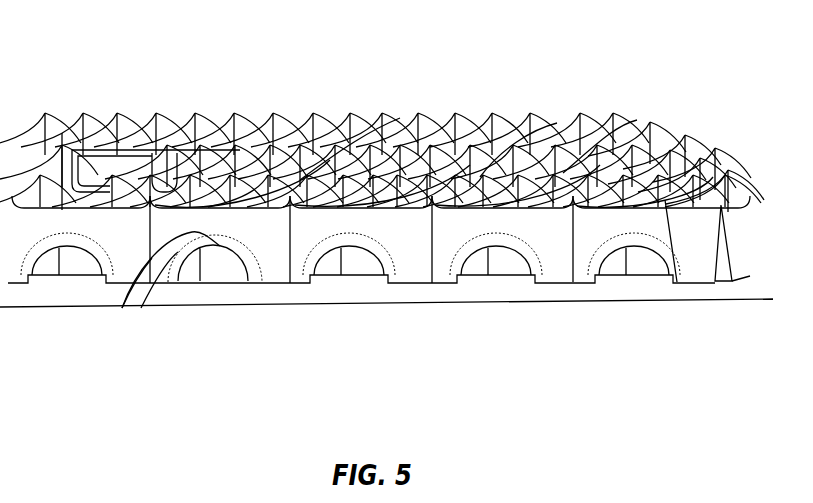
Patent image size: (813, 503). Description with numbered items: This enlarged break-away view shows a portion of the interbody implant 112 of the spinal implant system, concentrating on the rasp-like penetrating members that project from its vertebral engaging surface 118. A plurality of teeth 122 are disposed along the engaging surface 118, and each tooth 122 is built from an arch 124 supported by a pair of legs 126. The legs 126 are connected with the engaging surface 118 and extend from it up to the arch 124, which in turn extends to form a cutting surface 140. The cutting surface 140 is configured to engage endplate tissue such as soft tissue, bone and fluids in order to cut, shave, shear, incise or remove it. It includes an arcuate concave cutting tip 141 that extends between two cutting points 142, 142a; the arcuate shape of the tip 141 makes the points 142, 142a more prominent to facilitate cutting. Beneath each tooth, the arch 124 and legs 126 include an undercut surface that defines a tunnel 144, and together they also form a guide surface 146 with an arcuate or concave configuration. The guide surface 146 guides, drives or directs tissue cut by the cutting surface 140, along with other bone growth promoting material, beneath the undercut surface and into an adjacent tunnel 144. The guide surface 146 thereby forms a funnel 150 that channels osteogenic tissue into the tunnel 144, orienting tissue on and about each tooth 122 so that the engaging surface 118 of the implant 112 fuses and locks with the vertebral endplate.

The interbody implant 112 is at (603, 328).
The vertebral engaging surface 118 is at (483, 292).
The tooth 122 is at (270, 263).
The arch 124 is at (266, 125).
The legs 126 is at (141, 308).
The cutting surface 140 is at (172, 132).
The arcuate concave cutting tip 141 is at (235, 128).
The cutting point 142 is at (122, 132).
The cutting point 142a is at (315, 122).
The tunnel 144 is at (204, 296).
The guide surface 146 is at (248, 264).
The funnel 150 is at (122, 308).